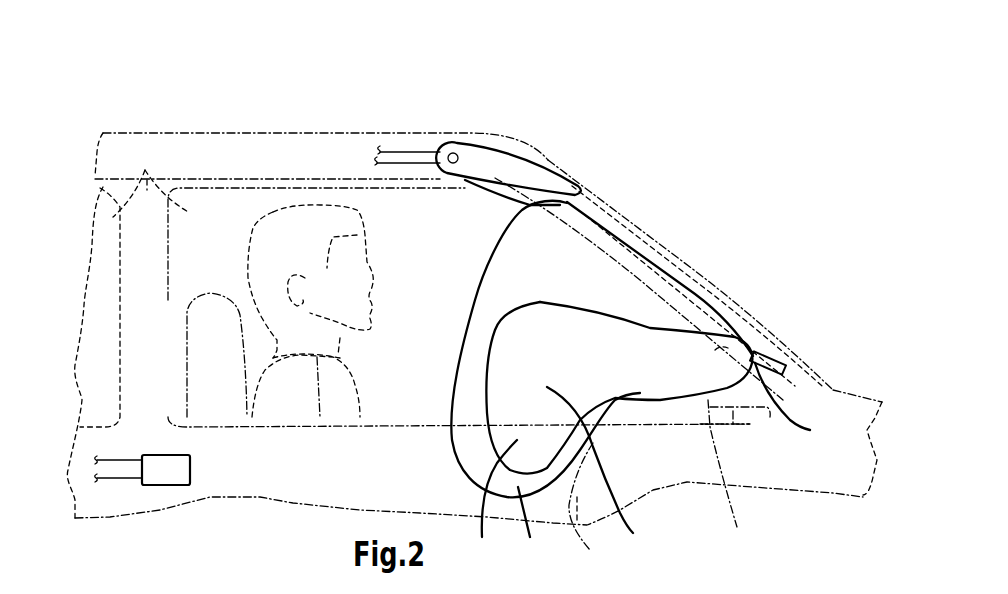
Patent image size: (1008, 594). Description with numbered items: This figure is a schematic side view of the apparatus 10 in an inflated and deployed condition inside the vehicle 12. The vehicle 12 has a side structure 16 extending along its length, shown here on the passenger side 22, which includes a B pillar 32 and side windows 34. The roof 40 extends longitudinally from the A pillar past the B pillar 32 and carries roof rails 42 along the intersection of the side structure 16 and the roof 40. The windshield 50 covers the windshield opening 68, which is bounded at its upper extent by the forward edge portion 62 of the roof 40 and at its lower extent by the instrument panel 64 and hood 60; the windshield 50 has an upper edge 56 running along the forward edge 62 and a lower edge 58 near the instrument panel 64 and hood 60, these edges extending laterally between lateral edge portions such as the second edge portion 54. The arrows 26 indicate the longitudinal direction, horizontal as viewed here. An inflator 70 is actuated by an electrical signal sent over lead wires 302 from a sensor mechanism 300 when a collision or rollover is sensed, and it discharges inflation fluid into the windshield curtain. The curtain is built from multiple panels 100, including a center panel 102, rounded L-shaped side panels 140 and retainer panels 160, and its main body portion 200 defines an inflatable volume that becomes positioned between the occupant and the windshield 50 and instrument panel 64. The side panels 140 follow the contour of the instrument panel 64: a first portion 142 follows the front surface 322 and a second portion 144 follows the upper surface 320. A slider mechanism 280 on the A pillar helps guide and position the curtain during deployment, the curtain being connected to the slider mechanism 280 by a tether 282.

The apparatus 10 is at (625, 147).
The vehicle 12 is at (567, 98).
The side structure 16 is at (263, 475).
The passenger side 22 is at (386, 403).
The arrows indicating longitudinal direction 26 is at (360, 452).
The B pillar 32 is at (145, 262).
The side windows 34 is at (151, 180).
The roof 40 is at (195, 148).
The roof rails 42 is at (278, 163).
The windshield 50 is at (727, 307).
The second edge portion 54 is at (630, 228).
The upper edge 56 is at (553, 172).
The lower edge 58 is at (820, 373).
The hood 60 is at (852, 427).
The forward edge portion of the vehicle roof 62 is at (540, 167).
The instrument panel 64 is at (735, 427).
The windshield opening 68 is at (623, 198).
The inflator 70 is at (457, 147).
The panels 100 is at (477, 316).
The center panel 102 is at (525, 531).
The side panels 140 is at (633, 360).
The first portion of the side panel 142 is at (487, 501).
The second portion of the side panel 144 is at (668, 358).
The retainer panels 160 is at (512, 195).
The main body portion 200 is at (614, 466).
The slider mechanism 280 is at (763, 353).
The tether 282 is at (796, 409).
The sensor mechanism 300 is at (170, 473).
The lead wires 302 is at (127, 462).
The upper surface 320 is at (738, 475).
The front surface 322 is at (591, 509).